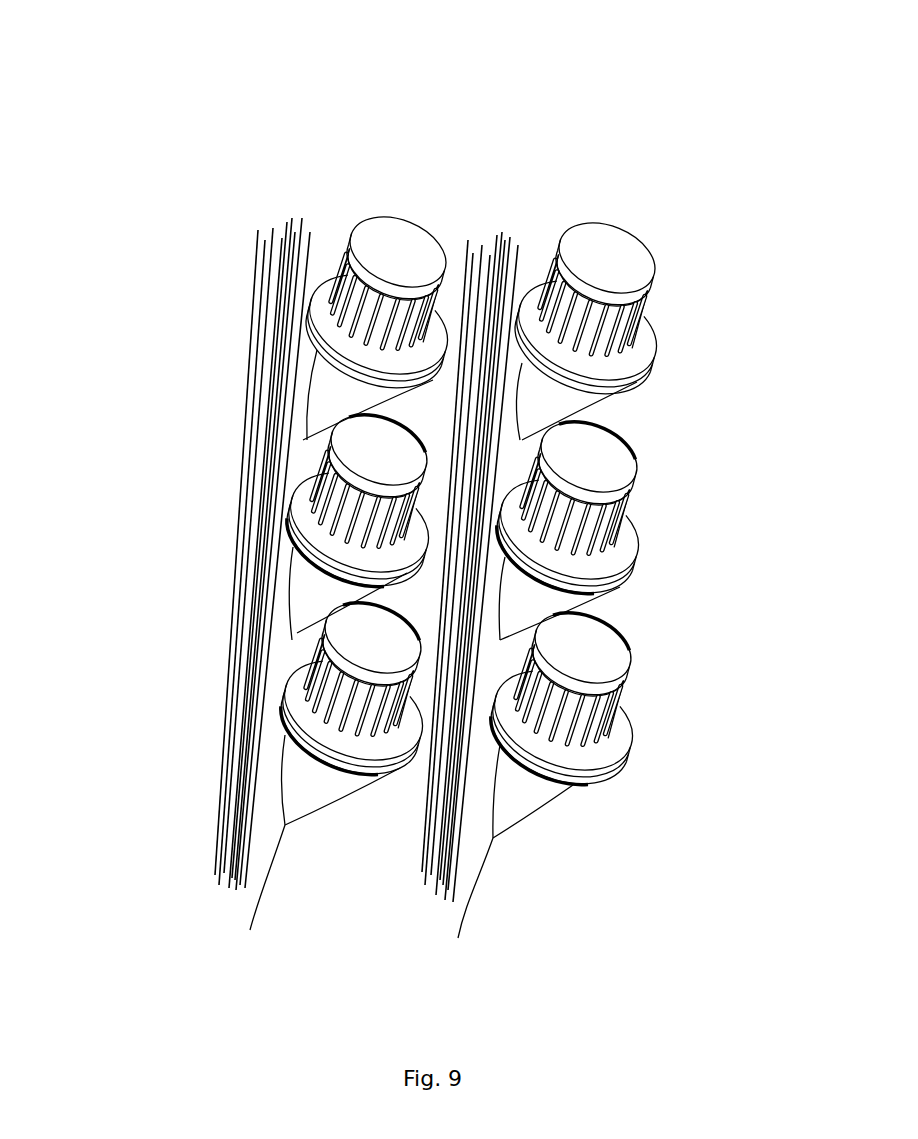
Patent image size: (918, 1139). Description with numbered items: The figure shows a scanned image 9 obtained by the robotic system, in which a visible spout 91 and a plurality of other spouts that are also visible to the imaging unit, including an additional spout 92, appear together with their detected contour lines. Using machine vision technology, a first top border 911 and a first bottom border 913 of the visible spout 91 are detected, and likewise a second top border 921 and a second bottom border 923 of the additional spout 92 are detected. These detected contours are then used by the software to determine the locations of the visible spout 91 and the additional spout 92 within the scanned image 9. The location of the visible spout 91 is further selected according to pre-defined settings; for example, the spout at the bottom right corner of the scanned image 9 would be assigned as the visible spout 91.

The scanned image 9 is at (676, 89).
The visible spout 91 is at (432, 707).
The first top border 911 is at (625, 637).
The first bottom border 913 is at (562, 782).
The additional spout 92 is at (436, 518).
The second top border 921 is at (600, 425).
The second bottom border 923 is at (563, 588).